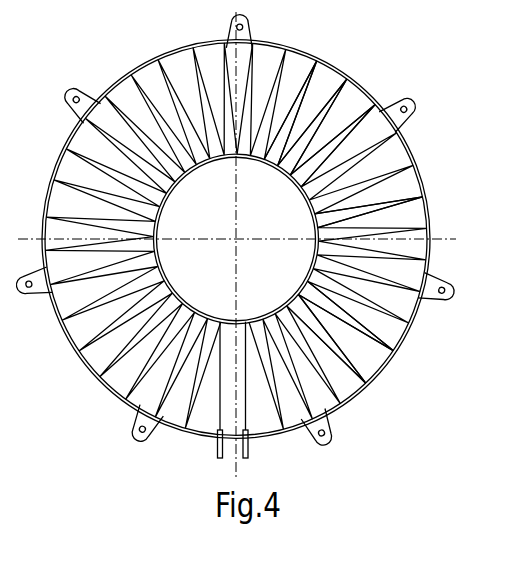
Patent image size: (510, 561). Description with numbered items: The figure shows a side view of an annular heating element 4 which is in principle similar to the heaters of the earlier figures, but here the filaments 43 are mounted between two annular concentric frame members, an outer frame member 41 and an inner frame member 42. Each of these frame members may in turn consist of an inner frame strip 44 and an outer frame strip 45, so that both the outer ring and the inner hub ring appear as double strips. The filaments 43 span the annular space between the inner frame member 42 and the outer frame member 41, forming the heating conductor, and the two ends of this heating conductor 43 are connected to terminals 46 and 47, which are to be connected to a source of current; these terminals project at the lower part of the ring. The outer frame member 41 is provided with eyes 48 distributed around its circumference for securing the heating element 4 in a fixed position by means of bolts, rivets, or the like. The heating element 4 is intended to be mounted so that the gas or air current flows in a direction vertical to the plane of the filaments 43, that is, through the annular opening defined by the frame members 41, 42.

The heating element 4 is at (241, 239).
The outer frame member 41 is at (428, 221).
The inner frame member 42 is at (166, 283).
The filaments 43 is at (320, 78).
The inner frame strip 44 is at (283, 178).
The outer frame strip 45 is at (313, 220).
The terminal 46 is at (214, 450).
The terminal 47 is at (251, 448).
The eyes 48 is at (232, 28).